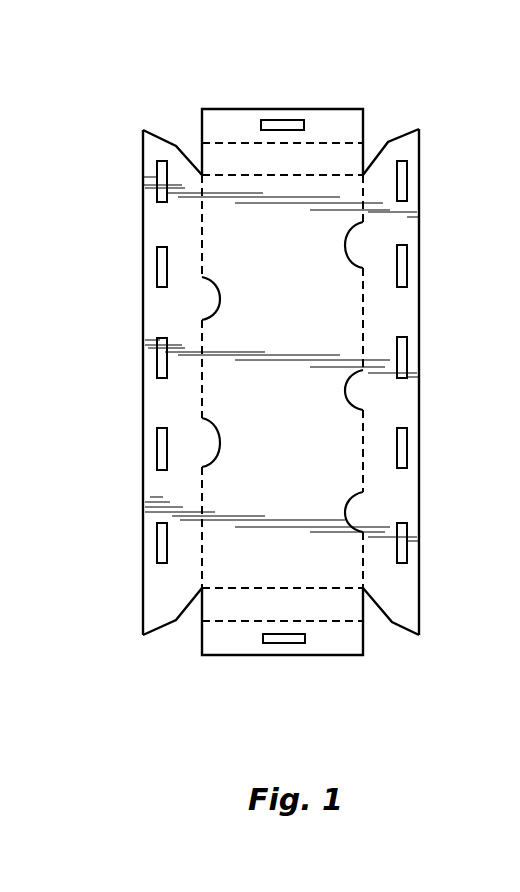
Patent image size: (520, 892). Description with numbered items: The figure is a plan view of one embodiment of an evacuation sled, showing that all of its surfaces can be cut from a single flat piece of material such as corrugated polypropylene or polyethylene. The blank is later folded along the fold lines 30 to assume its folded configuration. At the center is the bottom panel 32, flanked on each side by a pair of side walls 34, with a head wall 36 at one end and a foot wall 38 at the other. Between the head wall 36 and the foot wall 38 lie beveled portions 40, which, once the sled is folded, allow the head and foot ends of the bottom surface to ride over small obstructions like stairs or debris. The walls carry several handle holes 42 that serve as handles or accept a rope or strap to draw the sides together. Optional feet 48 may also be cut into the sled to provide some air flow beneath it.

The fold lines 30 is at (328, 141).
The bottom panel 32 is at (328, 447).
The side walls 34 is at (163, 495).
The head wall 36 is at (235, 125).
The foot wall 38 is at (227, 632).
The beveled portions 40 is at (217, 160).
The handle holes 42 is at (276, 121).
The feet 48 is at (353, 243).